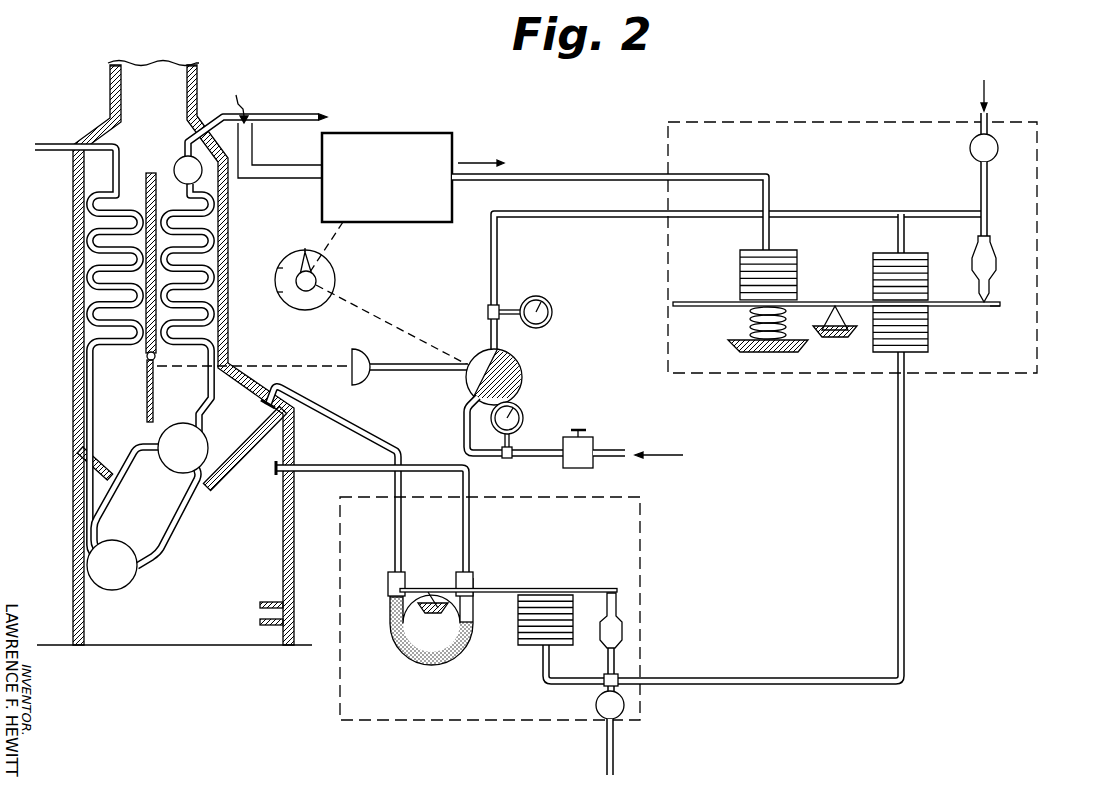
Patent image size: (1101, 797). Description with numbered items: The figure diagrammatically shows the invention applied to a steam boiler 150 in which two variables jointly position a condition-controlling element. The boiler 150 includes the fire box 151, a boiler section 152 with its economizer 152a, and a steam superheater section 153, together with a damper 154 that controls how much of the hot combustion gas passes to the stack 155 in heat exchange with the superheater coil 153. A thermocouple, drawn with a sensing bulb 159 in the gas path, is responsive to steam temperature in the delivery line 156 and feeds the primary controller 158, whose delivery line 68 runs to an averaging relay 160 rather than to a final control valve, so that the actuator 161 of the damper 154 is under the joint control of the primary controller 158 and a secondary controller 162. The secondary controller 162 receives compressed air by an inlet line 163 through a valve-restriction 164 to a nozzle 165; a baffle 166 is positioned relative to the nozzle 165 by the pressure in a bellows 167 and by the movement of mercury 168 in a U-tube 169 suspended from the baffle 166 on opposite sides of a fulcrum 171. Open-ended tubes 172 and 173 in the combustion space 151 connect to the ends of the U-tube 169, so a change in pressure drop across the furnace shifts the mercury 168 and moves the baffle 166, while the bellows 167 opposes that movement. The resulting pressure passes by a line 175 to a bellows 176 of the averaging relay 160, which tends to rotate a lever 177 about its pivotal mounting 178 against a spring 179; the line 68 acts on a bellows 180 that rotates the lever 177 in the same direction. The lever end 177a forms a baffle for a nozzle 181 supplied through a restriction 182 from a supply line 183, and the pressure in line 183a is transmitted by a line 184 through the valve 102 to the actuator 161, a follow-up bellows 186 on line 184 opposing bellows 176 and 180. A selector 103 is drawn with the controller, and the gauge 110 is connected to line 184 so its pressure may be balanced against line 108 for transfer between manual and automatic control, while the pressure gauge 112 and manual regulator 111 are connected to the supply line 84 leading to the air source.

The delivery line 68 is at (577, 175).
The supply line 84 is at (613, 457).
The valve 102 is at (521, 368).
The selector switch 103 is at (302, 302).
The line 108 is at (462, 432).
The gauge 110 is at (551, 301).
The manual regulator 111 is at (593, 441).
The pressure gauge 112 is at (525, 418).
The steam boiler 150 is at (56, 413).
The fire box 151 is at (165, 630).
The boiler section 152 is at (177, 532).
The economizer 152a is at (102, 210).
The steam superheater section 153 is at (217, 236).
The damper 154 is at (146, 380).
The stack 155 is at (108, 96).
The delivery line 156 is at (281, 115).
The primary controller 158 is at (397, 223).
The thermal bulb 159 is at (177, 160).
The averaging relay 160 is at (807, 122).
The actuator 161 is at (370, 357).
The secondary controller 162 is at (643, 548).
The inlet line 163 is at (615, 752).
The valve-restriction 164 is at (595, 705).
The nozzle 165 is at (618, 611).
The baffle 166 is at (591, 588).
The bellows 167 is at (518, 628).
The mercury 168 is at (447, 660).
The U-tube 169 is at (477, 578).
The fulcrum 171 is at (430, 597).
The open-ended tube 172 is at (303, 465).
The open-ended tube 173 is at (337, 408).
The line 175 is at (896, 544).
The bellows 176 is at (930, 328).
The lever 177 is at (810, 302).
The end of lever 177a is at (995, 303).
The pivotal mounting 178 is at (831, 334).
The spring 179 is at (747, 320).
The bellows 180 is at (740, 260).
The nozzle 181 is at (992, 283).
The restriction 182 is at (970, 148).
The supply line 183 is at (990, 117).
The line 183a is at (990, 193).
The line 184 is at (488, 285).
The follow-up bellows 186 is at (930, 254).